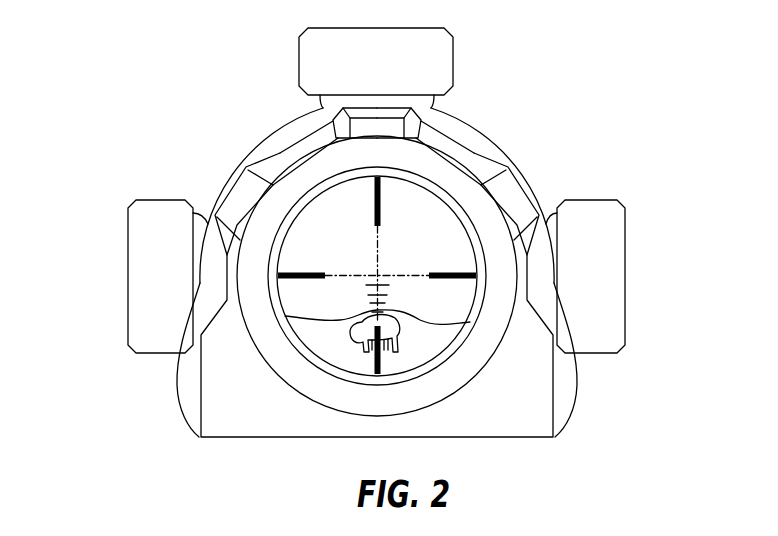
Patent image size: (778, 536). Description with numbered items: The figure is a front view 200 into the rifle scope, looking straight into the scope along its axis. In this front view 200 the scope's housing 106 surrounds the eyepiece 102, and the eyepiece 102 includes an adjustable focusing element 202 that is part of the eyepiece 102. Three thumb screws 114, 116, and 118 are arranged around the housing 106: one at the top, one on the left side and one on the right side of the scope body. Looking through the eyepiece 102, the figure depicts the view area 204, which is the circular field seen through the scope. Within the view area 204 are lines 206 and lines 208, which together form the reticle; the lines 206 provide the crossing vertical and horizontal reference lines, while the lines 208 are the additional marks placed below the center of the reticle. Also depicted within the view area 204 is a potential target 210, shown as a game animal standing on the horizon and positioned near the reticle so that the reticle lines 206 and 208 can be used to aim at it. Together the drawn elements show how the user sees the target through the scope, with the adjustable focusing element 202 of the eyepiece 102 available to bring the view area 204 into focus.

The front view 200 is at (122, 78).
The eyepiece 102 is at (272, 212).
The housing 106 is at (283, 132).
The thumb screw 114 is at (133, 253).
The thumb screw 116 is at (317, 55).
The thumb screw 118 is at (585, 223).
The adjustable focusing element 202 is at (322, 317).
The view area 204 is at (290, 352).
The lines 206 is at (400, 272).
The lines 208 is at (383, 287).
The potential target 210 is at (390, 313).